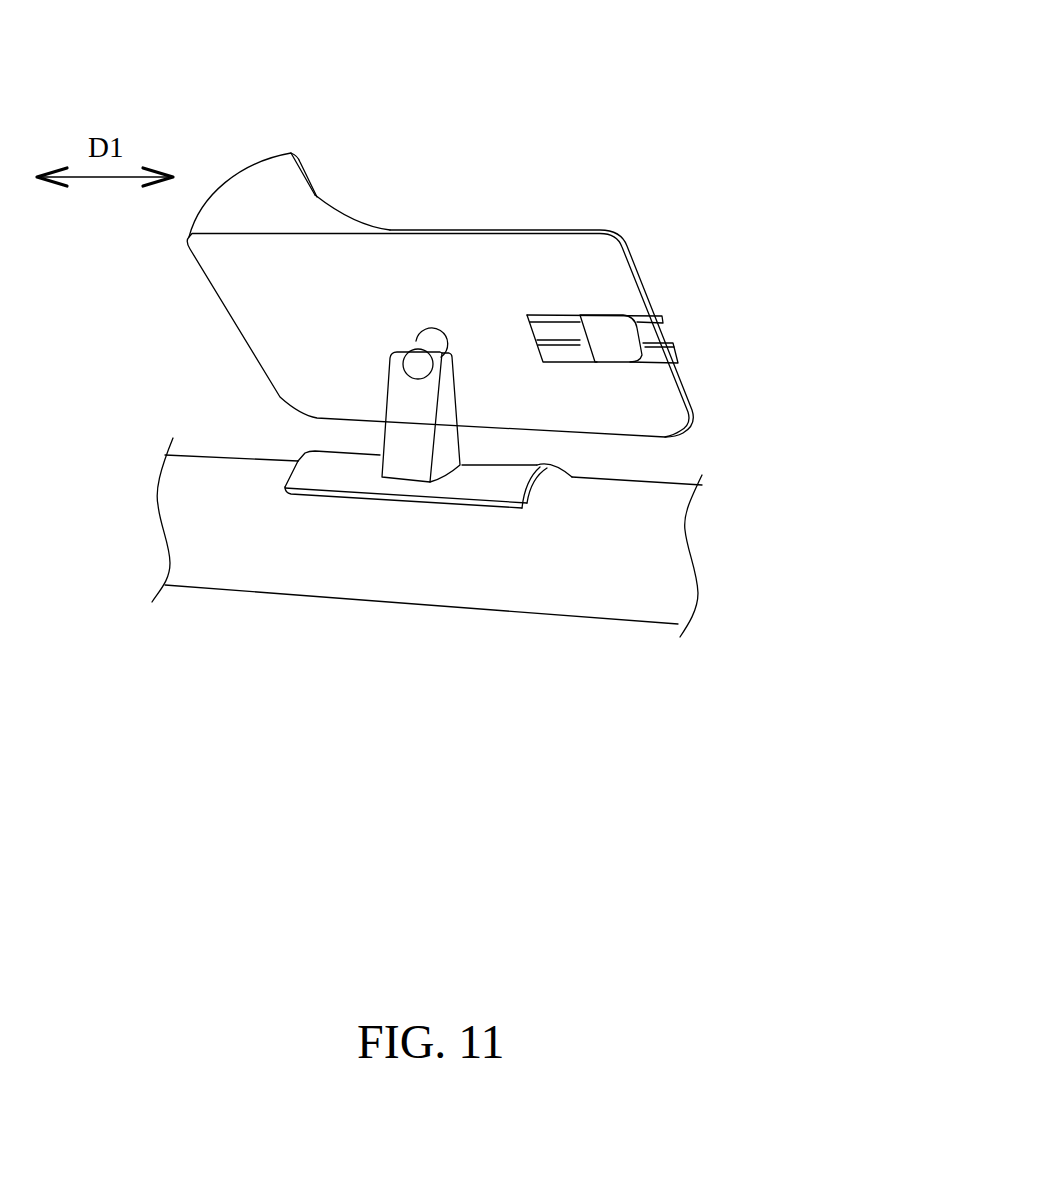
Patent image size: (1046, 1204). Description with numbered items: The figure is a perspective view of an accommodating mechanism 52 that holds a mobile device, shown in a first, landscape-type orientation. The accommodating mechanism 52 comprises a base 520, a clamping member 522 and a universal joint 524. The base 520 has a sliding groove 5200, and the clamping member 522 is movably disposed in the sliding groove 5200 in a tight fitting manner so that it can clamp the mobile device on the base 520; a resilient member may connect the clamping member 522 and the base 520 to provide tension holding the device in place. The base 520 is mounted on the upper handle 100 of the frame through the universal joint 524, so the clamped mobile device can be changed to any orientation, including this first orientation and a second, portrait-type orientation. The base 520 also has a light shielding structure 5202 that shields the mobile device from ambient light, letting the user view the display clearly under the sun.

The accommodating mechanism 52 is at (603, 72).
The base 520 is at (228, 313).
The light shielding structure 5202 is at (243, 175).
The sliding groove 5200 is at (662, 334).
The clamping member 522 is at (607, 330).
The universal joint 524 is at (412, 363).
The upper handle 100 is at (215, 455).